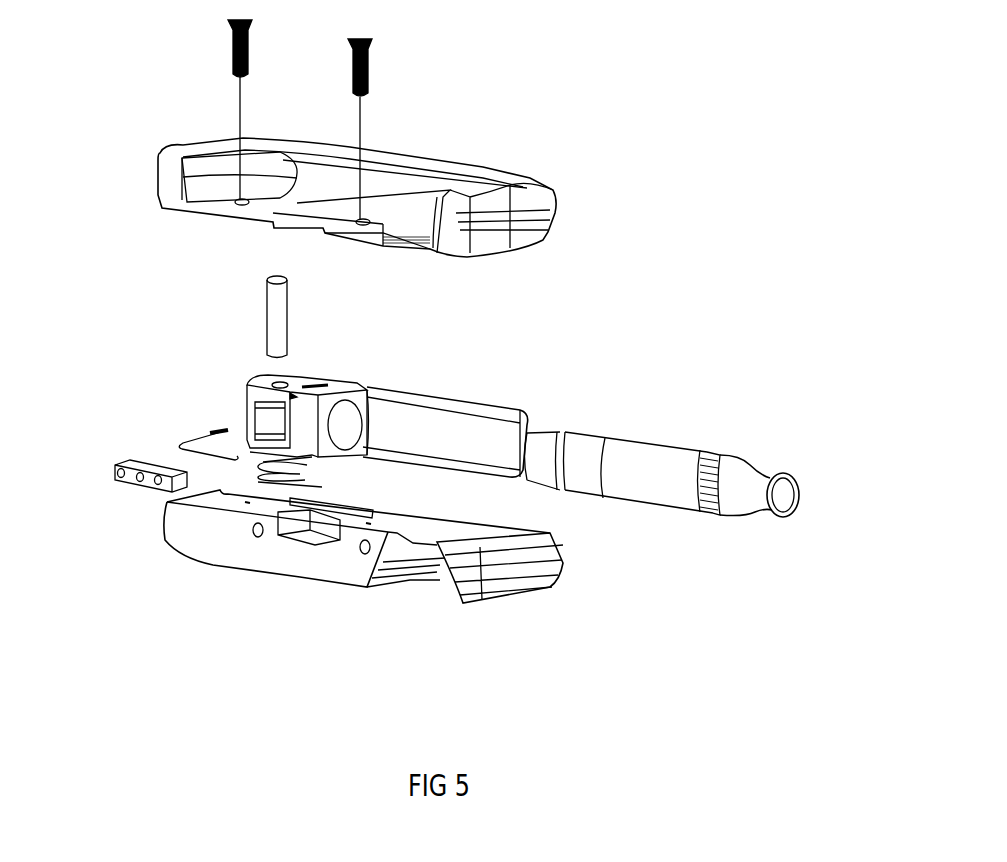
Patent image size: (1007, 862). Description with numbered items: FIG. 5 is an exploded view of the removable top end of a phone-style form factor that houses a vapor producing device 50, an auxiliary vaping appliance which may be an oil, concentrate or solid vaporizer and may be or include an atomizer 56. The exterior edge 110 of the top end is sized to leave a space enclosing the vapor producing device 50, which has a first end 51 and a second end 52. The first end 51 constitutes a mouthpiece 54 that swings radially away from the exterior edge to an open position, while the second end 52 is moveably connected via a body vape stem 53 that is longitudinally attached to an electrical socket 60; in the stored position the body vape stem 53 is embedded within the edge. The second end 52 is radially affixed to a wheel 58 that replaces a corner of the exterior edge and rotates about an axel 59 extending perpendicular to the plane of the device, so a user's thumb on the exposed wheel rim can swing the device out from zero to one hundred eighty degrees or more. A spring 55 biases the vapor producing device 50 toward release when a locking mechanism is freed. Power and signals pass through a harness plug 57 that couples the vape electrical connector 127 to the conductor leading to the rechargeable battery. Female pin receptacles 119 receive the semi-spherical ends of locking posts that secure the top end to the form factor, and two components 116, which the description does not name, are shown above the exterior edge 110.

The vapor producing device 50 is at (677, 260).
The first end 51 is at (785, 440).
The second end 52 is at (560, 420).
The body vape stem 53 is at (427, 392).
The mouthpiece 54 is at (742, 518).
The spring 55 is at (322, 487).
The atomizer 56 is at (655, 442).
The harness plug 57 is at (135, 482).
The wheel 58 is at (250, 403).
The axel 59 is at (267, 313).
The electrical socket 60 is at (340, 417).
The exterior edge 110 is at (553, 190).
The screws 116 is at (453, 110).
The female pin receptacle 119 is at (253, 538).
The vape electrical connector 127 is at (188, 437).